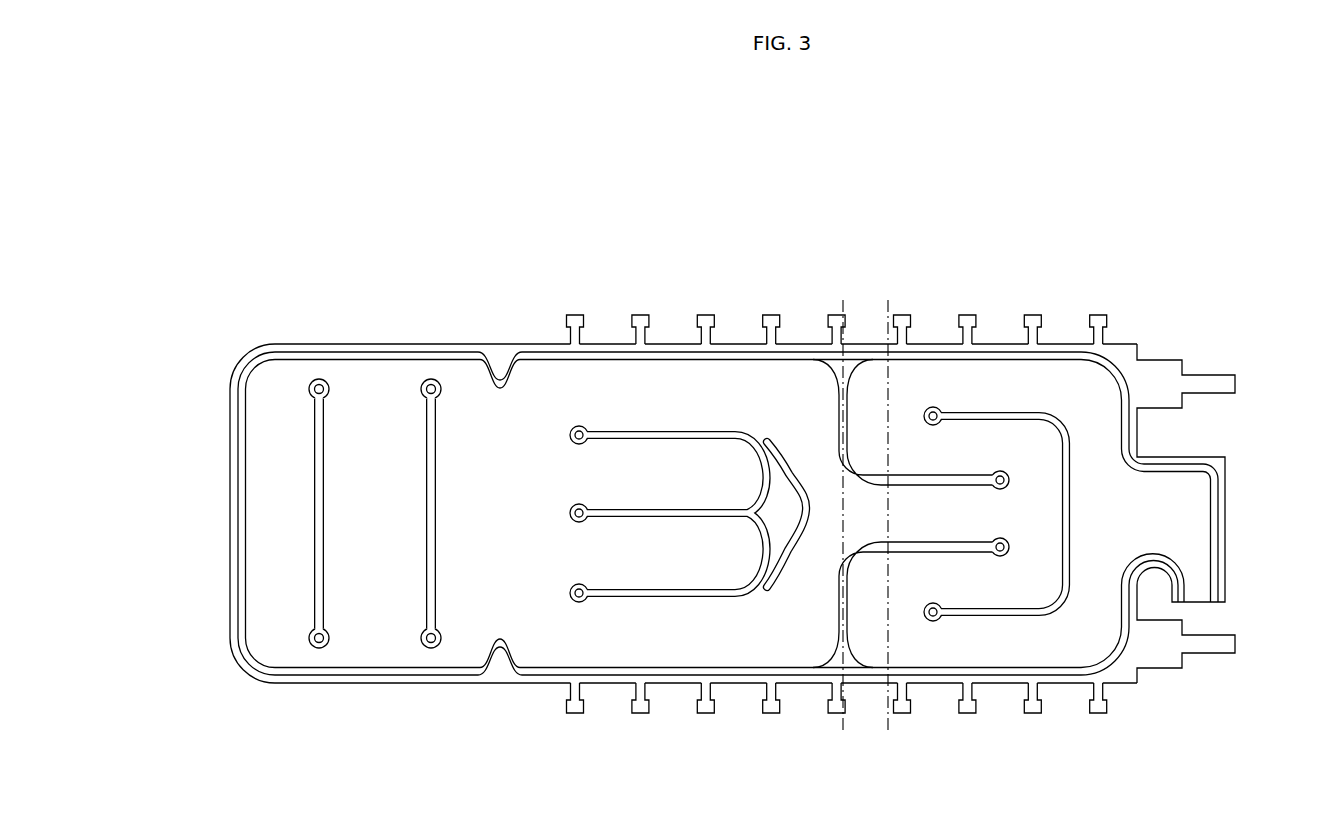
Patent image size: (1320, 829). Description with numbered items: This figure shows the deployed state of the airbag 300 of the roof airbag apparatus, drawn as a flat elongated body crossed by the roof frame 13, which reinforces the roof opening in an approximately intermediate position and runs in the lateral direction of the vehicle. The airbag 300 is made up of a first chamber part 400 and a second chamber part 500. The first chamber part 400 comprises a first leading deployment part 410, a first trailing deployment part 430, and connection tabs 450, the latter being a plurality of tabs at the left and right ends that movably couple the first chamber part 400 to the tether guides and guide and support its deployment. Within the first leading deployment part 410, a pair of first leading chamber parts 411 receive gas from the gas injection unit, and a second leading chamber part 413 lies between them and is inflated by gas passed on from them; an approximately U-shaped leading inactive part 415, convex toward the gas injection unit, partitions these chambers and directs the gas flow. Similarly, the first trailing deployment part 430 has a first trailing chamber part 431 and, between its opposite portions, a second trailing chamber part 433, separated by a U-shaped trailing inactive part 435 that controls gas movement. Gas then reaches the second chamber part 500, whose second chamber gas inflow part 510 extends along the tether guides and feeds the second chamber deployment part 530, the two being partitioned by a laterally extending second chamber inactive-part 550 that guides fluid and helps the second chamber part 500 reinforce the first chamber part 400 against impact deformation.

The airbag 300 is at (1230, 168).
The first chamber part 400 is at (850, 263).
The first leading deployment part 410 is at (1030, 430).
The first leading chamber part 411 is at (1030, 633).
The second leading chamber part 413 is at (970, 450).
The leading inactive part 415 is at (1060, 423).
The first trailing deployment part 430 is at (671, 430).
The first trailing chamber part 431 is at (675, 640).
The second trailing chamber part 433 is at (618, 485).
The trailing inactive part 435 is at (793, 460).
The connection tab 450 is at (1098, 714).
The second chamber part 500 is at (313, 422).
The second chamber gas inflow part 510 is at (440, 370).
The second chamber deployment part 530 is at (367, 532).
The second chamber inactive-part 550 is at (320, 482).
The roof frame 13 is at (890, 633).